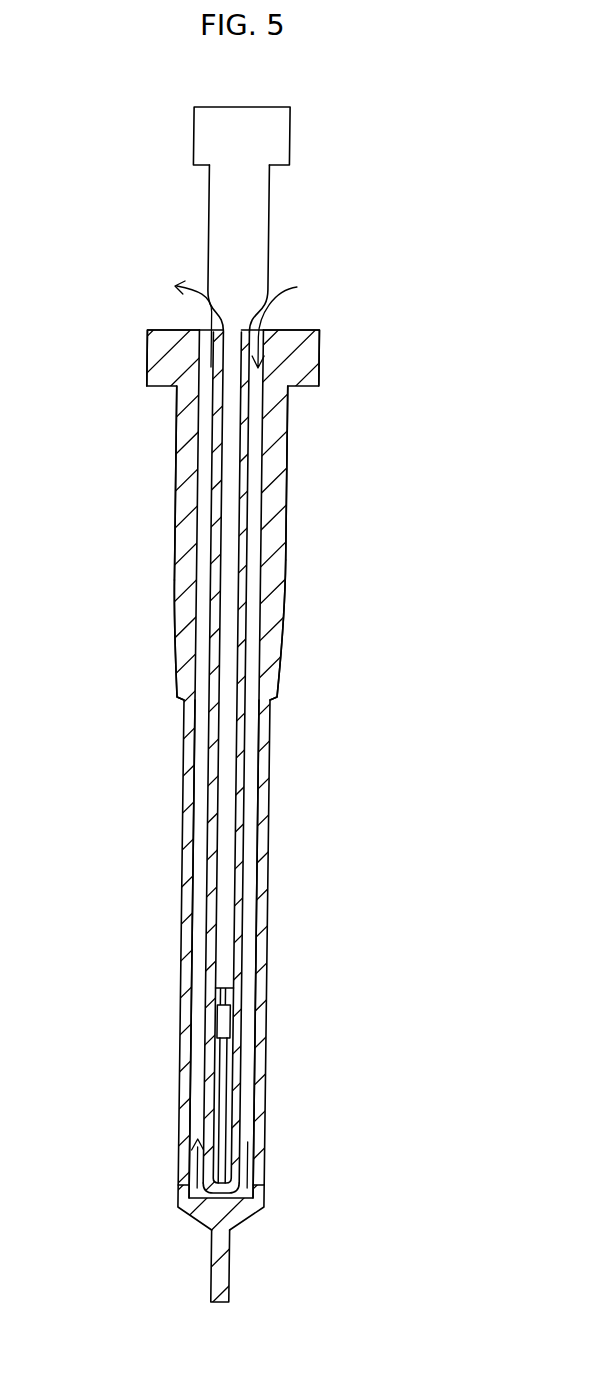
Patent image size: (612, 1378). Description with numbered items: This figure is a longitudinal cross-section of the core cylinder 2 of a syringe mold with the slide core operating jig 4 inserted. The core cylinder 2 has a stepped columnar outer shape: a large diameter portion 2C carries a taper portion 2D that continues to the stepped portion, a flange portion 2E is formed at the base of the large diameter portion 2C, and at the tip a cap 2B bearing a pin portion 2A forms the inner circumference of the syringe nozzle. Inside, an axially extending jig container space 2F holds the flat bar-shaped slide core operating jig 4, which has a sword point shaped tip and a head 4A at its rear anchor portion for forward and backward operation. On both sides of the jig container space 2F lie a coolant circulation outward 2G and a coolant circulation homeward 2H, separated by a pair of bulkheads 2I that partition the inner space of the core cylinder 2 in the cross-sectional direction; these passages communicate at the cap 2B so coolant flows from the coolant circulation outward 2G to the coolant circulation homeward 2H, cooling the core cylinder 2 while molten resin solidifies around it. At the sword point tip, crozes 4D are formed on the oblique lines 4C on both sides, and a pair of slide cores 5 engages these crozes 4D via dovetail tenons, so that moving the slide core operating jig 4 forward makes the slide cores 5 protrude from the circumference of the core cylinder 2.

The core cylinder 2 is at (164, 547).
The pin portion 2A is at (230, 1263).
The cap 2B is at (178, 1200).
The large diameter portion 2C is at (288, 490).
The taper portion 2D is at (283, 683).
The flange portion 2E is at (318, 353).
The jig container space 2F is at (210, 926).
The coolant circulation outward 2G is at (250, 974).
The coolant circulation homeward 2H is at (195, 975).
The bulkhead 2I is at (208, 782).
The slide core operating jig 4 is at (281, 234).
The head 4A is at (187, 139).
The oblique line 4C is at (232, 1117).
The croze 4D is at (213, 1062).
The slide core 5 is at (225, 1022).